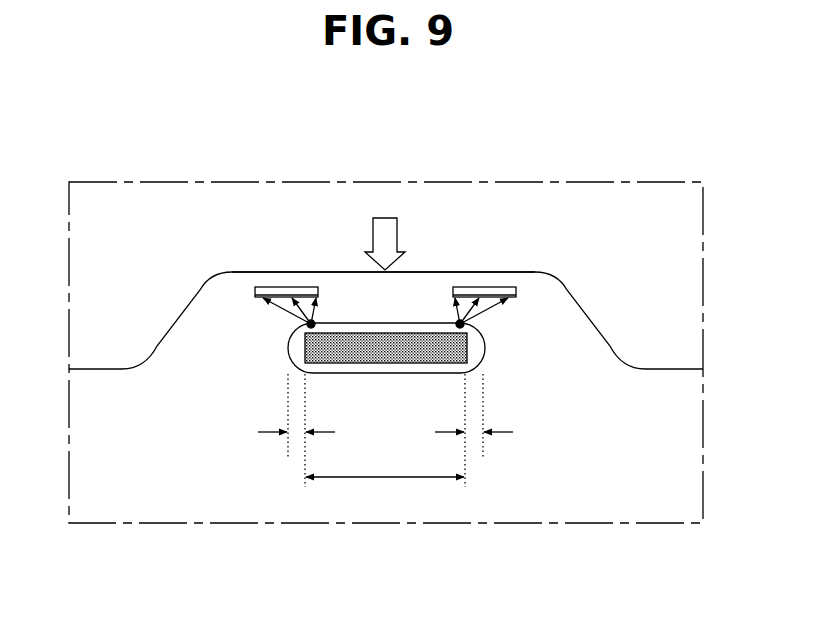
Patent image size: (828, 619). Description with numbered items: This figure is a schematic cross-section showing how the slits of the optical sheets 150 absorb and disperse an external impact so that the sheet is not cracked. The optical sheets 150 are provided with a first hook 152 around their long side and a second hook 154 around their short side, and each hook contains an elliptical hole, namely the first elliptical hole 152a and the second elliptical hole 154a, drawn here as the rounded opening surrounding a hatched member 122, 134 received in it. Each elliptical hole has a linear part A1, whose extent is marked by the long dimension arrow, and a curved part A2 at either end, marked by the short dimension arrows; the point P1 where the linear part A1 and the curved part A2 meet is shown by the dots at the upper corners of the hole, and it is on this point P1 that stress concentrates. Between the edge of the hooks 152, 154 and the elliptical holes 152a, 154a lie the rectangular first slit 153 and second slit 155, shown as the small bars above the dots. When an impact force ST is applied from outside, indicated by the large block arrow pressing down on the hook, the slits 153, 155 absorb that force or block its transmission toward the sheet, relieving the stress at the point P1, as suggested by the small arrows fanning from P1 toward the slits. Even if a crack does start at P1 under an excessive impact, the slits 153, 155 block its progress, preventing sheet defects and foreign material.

The optical sheets 150 is at (667, 383).
The first hook 152 is at (413, 253).
The second hook 154 is at (548, 290).
The first slit 153 is at (383, 257).
The second slit 155 is at (273, 292).
The first elliptical hole 152a is at (459, 356).
The second elliptical hole 154a is at (472, 351).
The electronic module 122 is at (386, 380).
The sensor 134 is at (390, 353).
The point where linear part and curved part meet P1 is at (387, 313).
The impact force ST is at (385, 231).
The linear part A1 is at (385, 437).
The curved part A2 is at (385, 417).